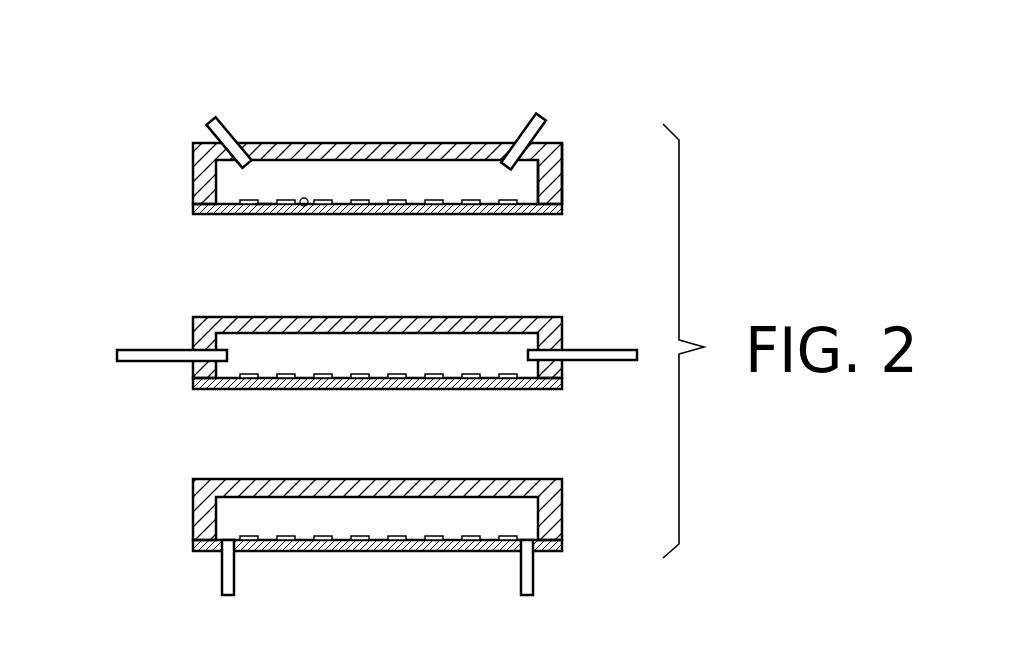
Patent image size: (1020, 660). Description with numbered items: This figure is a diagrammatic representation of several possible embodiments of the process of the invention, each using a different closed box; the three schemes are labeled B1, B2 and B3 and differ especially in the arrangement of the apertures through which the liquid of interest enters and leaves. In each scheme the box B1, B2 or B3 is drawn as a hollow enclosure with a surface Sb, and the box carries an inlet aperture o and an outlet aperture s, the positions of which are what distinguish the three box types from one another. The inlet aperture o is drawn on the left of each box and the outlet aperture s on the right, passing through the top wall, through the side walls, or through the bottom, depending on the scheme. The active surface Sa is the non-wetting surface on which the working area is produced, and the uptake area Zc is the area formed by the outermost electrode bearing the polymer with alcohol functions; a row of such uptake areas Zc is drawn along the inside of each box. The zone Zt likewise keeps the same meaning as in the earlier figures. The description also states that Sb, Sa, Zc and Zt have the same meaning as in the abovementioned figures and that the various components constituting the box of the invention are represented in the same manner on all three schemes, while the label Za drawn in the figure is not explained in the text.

The box B1 is at (156, 145).
The box B2 is at (156, 330).
The box B3 is at (156, 510).
The inlet aperture o is at (236, 142).
The outlet aperture s is at (613, 357).
The active surface Sa is at (537, 190).
The surface Sb is at (193, 208).
The uptake area Zc is at (264, 210).
The attachment zone Za is at (306, 211).
The zone Zt is at (262, 212).